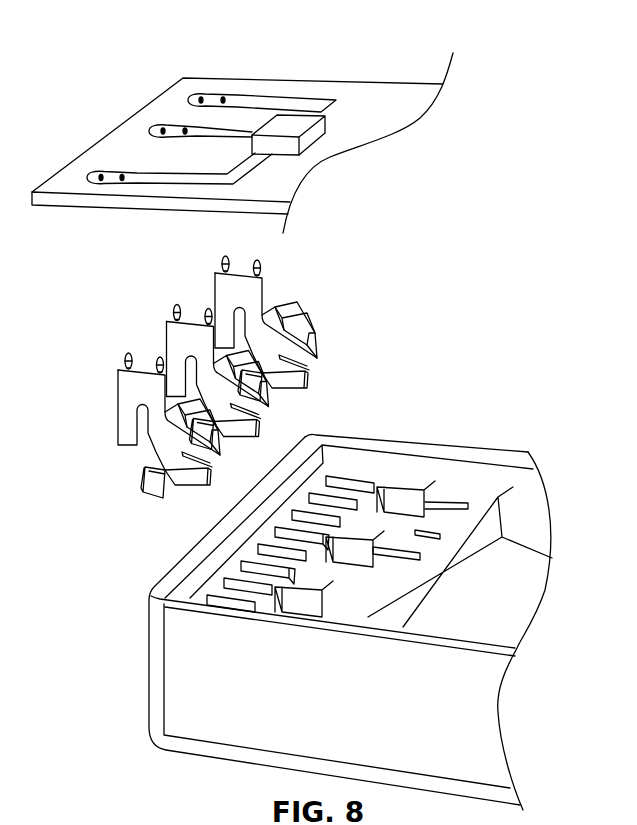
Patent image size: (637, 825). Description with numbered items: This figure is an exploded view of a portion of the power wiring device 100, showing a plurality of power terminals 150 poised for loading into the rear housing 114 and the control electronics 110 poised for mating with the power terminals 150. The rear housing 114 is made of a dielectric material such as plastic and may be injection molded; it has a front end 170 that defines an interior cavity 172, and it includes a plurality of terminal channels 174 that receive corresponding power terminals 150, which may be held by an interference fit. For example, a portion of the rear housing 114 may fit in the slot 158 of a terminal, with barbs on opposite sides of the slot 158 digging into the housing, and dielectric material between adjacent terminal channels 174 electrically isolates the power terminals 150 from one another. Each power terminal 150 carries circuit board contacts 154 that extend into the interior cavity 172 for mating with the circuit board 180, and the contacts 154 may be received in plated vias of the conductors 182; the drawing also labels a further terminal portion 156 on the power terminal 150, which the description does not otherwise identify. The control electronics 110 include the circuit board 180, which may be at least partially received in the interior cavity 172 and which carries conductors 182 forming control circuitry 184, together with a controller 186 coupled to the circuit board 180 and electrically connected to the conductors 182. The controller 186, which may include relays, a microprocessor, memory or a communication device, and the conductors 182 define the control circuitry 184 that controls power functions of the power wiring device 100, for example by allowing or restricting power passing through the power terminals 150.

The power wiring device 100 is at (345, 608).
The control electronics 110 is at (275, 121).
The rear housing 114 is at (480, 720).
The power terminals 150 is at (211, 369).
The circuit board contacts 154 is at (206, 258).
The contact mating portion 156 is at (326, 336).
The slot 158 is at (116, 472).
The front end 170 is at (381, 608).
The interior cavity 172 is at (492, 480).
The terminal channels 174 is at (390, 507).
The circuit board 180 is at (275, 85).
The conductors 182 is at (250, 97).
The control circuitry 184 is at (153, 125).
The controller 186 is at (313, 135).